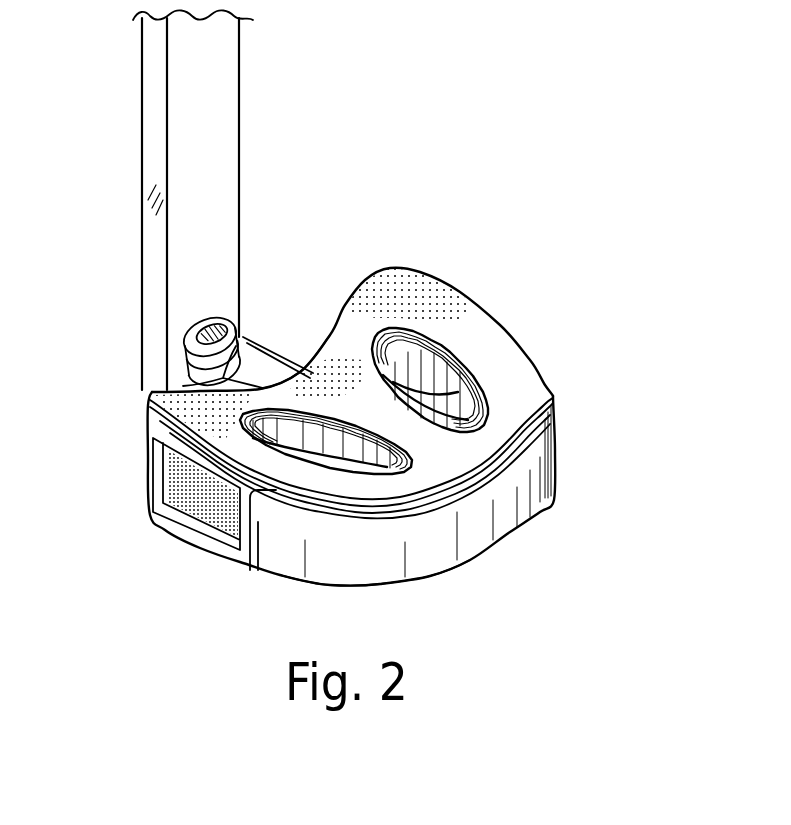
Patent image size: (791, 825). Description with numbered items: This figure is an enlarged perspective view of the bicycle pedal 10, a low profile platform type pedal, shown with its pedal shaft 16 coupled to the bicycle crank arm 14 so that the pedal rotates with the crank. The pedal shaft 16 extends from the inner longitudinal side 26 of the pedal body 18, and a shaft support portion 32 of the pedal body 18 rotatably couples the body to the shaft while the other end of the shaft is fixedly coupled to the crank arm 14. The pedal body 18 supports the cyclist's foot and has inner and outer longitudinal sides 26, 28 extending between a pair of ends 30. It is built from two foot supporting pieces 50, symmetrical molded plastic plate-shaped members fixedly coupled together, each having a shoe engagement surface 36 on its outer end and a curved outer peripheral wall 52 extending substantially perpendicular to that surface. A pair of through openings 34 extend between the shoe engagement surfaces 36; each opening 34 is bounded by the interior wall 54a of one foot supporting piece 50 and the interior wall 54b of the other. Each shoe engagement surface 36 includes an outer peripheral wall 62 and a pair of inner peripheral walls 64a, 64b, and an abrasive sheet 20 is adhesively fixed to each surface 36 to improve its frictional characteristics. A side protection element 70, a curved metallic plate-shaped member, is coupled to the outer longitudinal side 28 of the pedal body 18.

The bicycle pedal 10 is at (589, 296).
The bicycle crank arm 14 is at (241, 127).
The pedal shaft 16 is at (187, 337).
The pedal body 18 is at (144, 433).
The abrasive sheet 20 is at (493, 357).
The inner longitudinal side 26 is at (343, 323).
The outer longitudinal side 28 is at (430, 578).
The end 30 is at (141, 523).
The shaft support portion 32 is at (277, 335).
The through opening 34 is at (452, 386).
The shoe engagement surface 36 is at (383, 279).
The foot supporting piece 50 is at (148, 487).
The curved outer peripheral wall 52 is at (151, 428).
The interior wall 54a is at (424, 390).
The interior wall 54b is at (418, 363).
The outer peripheral wall 62 is at (500, 463).
The inner peripheral wall 64a is at (313, 458).
The inner peripheral wall 64b is at (470, 382).
The side protection element 70 is at (558, 455).